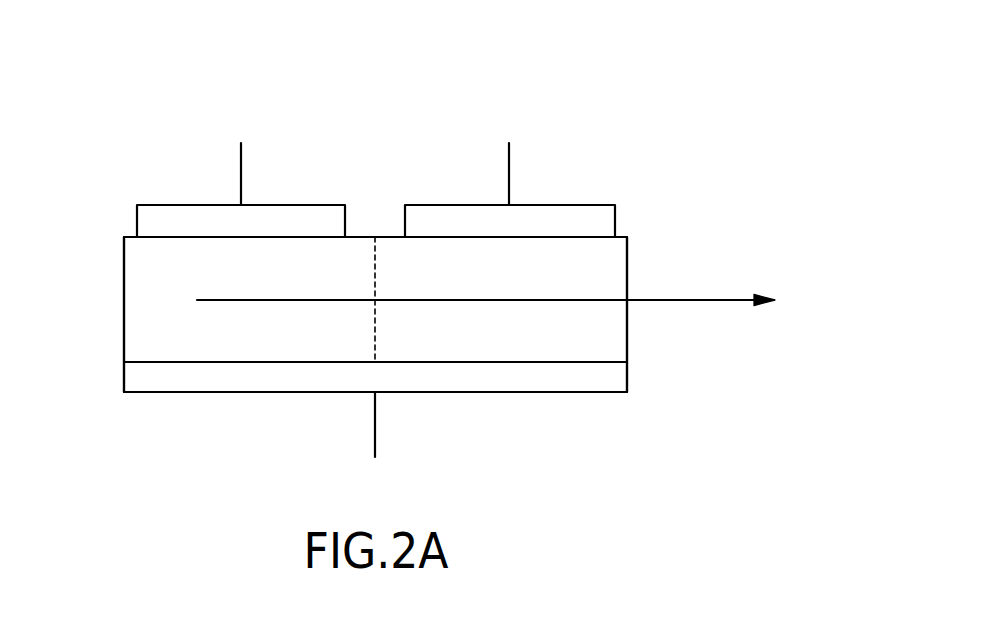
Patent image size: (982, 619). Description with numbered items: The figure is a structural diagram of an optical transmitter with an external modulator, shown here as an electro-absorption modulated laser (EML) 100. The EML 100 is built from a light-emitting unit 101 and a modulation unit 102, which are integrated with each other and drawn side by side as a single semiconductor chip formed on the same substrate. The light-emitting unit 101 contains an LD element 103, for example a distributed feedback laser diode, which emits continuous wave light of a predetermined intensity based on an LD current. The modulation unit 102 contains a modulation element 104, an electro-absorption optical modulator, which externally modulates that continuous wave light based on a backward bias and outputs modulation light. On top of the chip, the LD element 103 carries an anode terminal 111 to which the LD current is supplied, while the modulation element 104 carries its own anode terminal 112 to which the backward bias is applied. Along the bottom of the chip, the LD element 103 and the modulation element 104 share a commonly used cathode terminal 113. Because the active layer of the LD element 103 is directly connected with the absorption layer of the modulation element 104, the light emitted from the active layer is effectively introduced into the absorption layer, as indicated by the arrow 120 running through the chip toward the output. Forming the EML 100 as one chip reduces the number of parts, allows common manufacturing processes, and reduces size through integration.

The electro-absorption modulated laser (EML) 100 is at (409, 240).
The light-emitting unit 101 is at (357, 412).
The modulation unit 102 is at (393, 412).
The LD element 103 is at (137, 268).
The modulation element 104 is at (613, 268).
The anode terminal 111 is at (198, 212).
The anode terminal 112 is at (552, 213).
The cathode terminal 113 is at (137, 373).
The arrow 120 is at (712, 325).